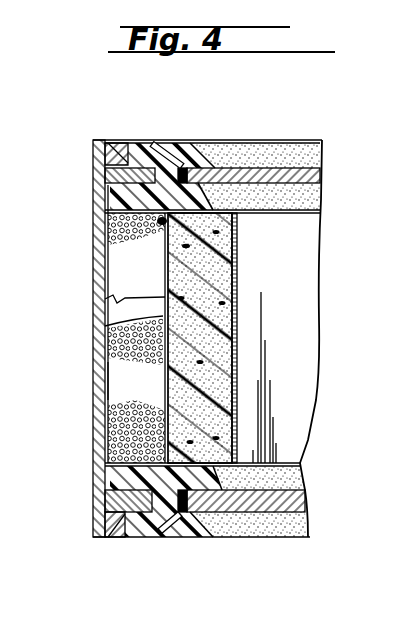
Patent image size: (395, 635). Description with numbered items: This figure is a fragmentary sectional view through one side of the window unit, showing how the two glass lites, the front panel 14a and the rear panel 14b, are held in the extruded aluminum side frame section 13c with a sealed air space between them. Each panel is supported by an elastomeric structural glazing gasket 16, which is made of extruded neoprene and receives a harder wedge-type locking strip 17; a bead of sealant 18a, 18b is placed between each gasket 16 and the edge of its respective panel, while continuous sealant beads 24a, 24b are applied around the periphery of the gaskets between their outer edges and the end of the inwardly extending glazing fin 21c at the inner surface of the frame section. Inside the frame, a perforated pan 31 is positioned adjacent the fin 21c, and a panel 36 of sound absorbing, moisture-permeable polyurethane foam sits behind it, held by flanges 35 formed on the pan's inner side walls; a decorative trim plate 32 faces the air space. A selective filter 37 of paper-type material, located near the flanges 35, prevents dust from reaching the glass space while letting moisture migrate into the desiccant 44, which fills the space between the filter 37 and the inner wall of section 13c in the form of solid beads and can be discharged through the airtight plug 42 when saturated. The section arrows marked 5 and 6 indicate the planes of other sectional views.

The side frame section 13c is at (100, 222).
The front glass panel 14a is at (297, 498).
The rear glass panel 14b is at (297, 166).
The elastomeric structural glazing gasket 16 is at (143, 143).
The wedge-type locking strip 17 is at (165, 145).
The bead of sealant 18a is at (184, 540).
The bead of sealant 18b is at (190, 160).
The glazing fin 21c is at (108, 171).
The continuous sealant bead 24a is at (118, 538).
The continuous sealant bead 24b is at (116, 148).
The perforated pan 31 is at (237, 429).
The decorative trim plate 32 is at (298, 400).
The flange 35 is at (160, 222).
The sound absorbing foam panel 36 is at (105, 299).
The selective filter 37 is at (105, 326).
The discharge plug 42 is at (108, 420).
The desiccant 44 is at (106, 363).
The section line 5- 5 is at (248, 108).
The section line 6- 6 is at (67, 553).